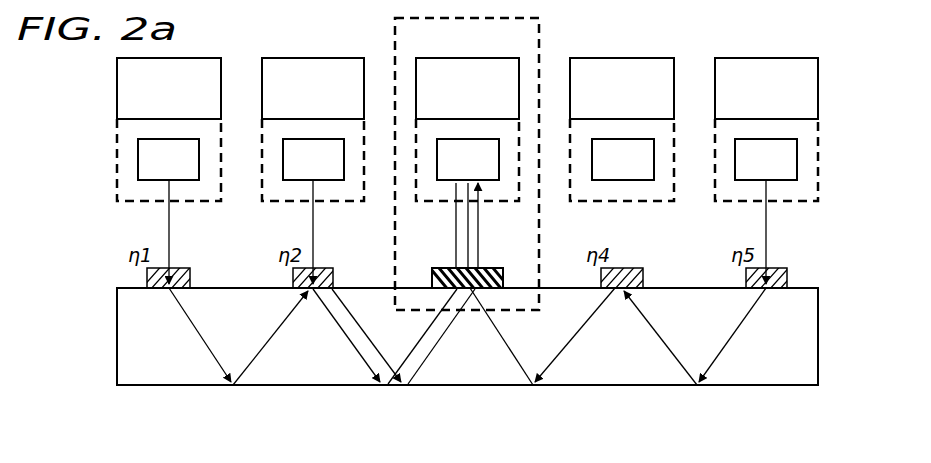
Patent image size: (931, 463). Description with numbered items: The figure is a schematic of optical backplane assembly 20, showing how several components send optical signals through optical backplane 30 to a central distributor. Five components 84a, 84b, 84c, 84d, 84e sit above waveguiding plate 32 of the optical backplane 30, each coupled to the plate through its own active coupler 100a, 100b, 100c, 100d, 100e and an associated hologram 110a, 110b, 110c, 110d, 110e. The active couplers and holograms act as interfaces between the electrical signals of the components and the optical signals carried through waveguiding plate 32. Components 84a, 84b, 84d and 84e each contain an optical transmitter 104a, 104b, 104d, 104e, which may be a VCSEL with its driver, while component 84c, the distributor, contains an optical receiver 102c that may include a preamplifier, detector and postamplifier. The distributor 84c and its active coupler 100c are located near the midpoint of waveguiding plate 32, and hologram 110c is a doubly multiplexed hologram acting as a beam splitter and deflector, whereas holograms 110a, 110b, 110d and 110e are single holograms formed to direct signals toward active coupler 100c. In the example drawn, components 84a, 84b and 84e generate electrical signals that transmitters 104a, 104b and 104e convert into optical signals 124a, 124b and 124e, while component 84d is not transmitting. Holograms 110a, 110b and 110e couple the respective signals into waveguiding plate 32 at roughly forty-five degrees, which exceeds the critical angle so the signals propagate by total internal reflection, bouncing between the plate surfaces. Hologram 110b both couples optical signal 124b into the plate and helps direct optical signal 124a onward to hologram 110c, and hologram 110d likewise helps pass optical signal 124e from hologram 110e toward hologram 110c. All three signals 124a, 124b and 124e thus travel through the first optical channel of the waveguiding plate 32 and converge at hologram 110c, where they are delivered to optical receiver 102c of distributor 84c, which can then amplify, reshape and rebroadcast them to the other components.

The optical backplane assembly 20 is at (93, 162).
The optical backplane 30 is at (117, 336).
The waveguiding plate 32 is at (761, 386).
The component 84a is at (209, 58).
The component 84b is at (312, 58).
The distributor 84c is at (540, 39).
The component 84d is at (641, 58).
The component 84e is at (766, 58).
The optical transmitter 104a is at (170, 138).
The optical transmitter 104b is at (314, 138).
The optical receiver 102c is at (468, 138).
The optical transmitter 104d is at (620, 138).
The optical transmitter 104e is at (766, 138).
The active coupler 100a is at (197, 196).
The active coupler 100b is at (340, 196).
The active coupler 100c is at (495, 196).
The active coupler 100d is at (632, 196).
The active coupler 100e is at (797, 196).
The hologram 110a is at (147, 279).
The hologram 110b is at (293, 279).
The hologram 110c is at (442, 268).
The hologram 110d is at (643, 279).
The hologram 110e is at (787, 279).
The optical signal 124a is at (167, 232).
The optical signal 124b is at (434, 403).
The optical signal 124e is at (538, 343).